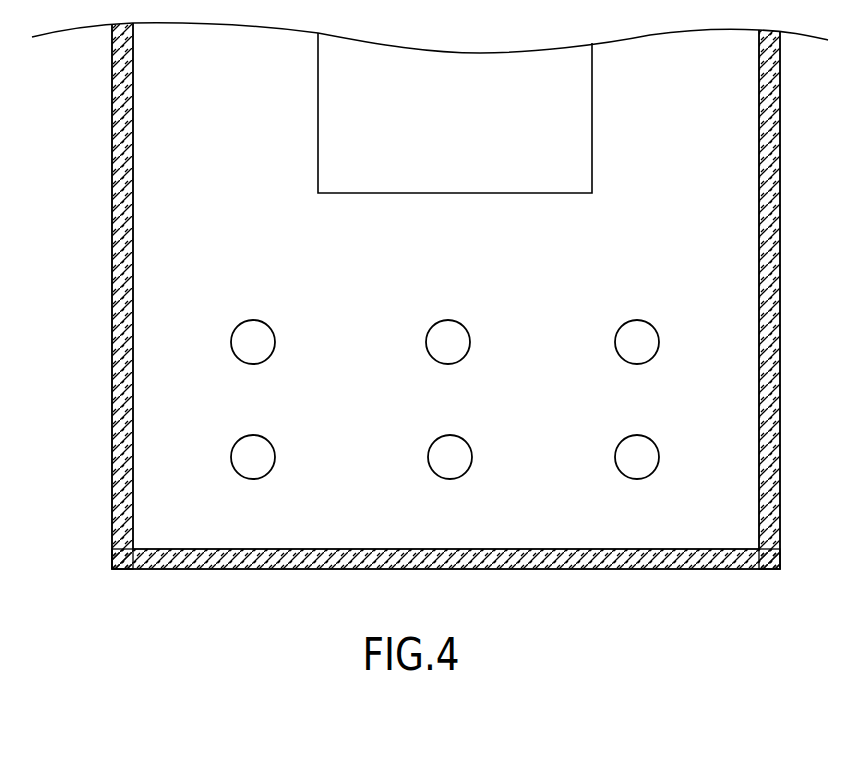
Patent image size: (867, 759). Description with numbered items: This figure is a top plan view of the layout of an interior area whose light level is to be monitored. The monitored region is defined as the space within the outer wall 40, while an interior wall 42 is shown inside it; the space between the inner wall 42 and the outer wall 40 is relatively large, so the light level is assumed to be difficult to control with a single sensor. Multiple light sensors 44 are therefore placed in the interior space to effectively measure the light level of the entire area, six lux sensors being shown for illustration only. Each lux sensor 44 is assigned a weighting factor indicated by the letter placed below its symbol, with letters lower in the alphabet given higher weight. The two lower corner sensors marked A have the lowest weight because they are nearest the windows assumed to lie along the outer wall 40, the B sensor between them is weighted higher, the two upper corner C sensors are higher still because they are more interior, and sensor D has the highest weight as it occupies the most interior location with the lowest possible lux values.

The outer wall 40 is at (112, 272).
The interior wall 42 is at (318, 117).
The light sensors 44 is at (427, 335).